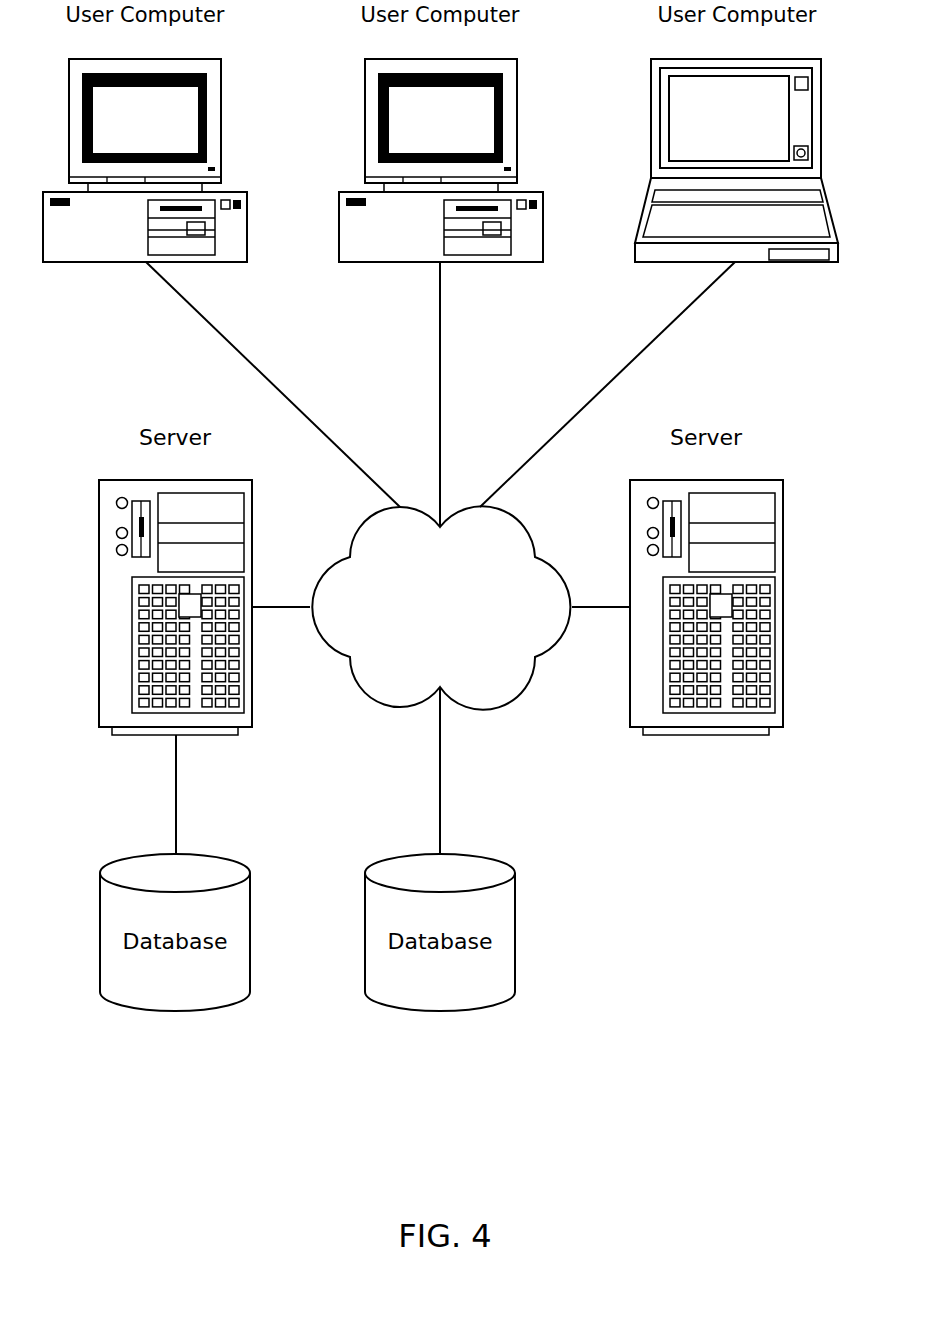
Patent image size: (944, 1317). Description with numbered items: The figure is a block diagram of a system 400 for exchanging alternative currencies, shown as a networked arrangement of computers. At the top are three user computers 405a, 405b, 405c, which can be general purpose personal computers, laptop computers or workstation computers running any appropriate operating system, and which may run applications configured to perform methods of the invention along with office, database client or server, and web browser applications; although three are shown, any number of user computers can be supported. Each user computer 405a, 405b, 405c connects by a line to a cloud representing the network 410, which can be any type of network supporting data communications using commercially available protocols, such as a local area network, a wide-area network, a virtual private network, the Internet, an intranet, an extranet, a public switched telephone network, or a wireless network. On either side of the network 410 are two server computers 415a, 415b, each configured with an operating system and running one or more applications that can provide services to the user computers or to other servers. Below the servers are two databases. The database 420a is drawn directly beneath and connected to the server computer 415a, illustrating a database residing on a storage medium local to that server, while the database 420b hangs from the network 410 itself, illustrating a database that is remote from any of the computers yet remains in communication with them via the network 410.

The system 400 is at (690, 1058).
The user computer 405a is at (247, 210).
The user computer 405b is at (339, 210).
The user computer 405c is at (651, 160).
The network 410 is at (478, 708).
The server computer 415a is at (99, 607).
The server computer 415b is at (782, 607).
The database 420a is at (175, 1007).
The database 420b is at (440, 1007).